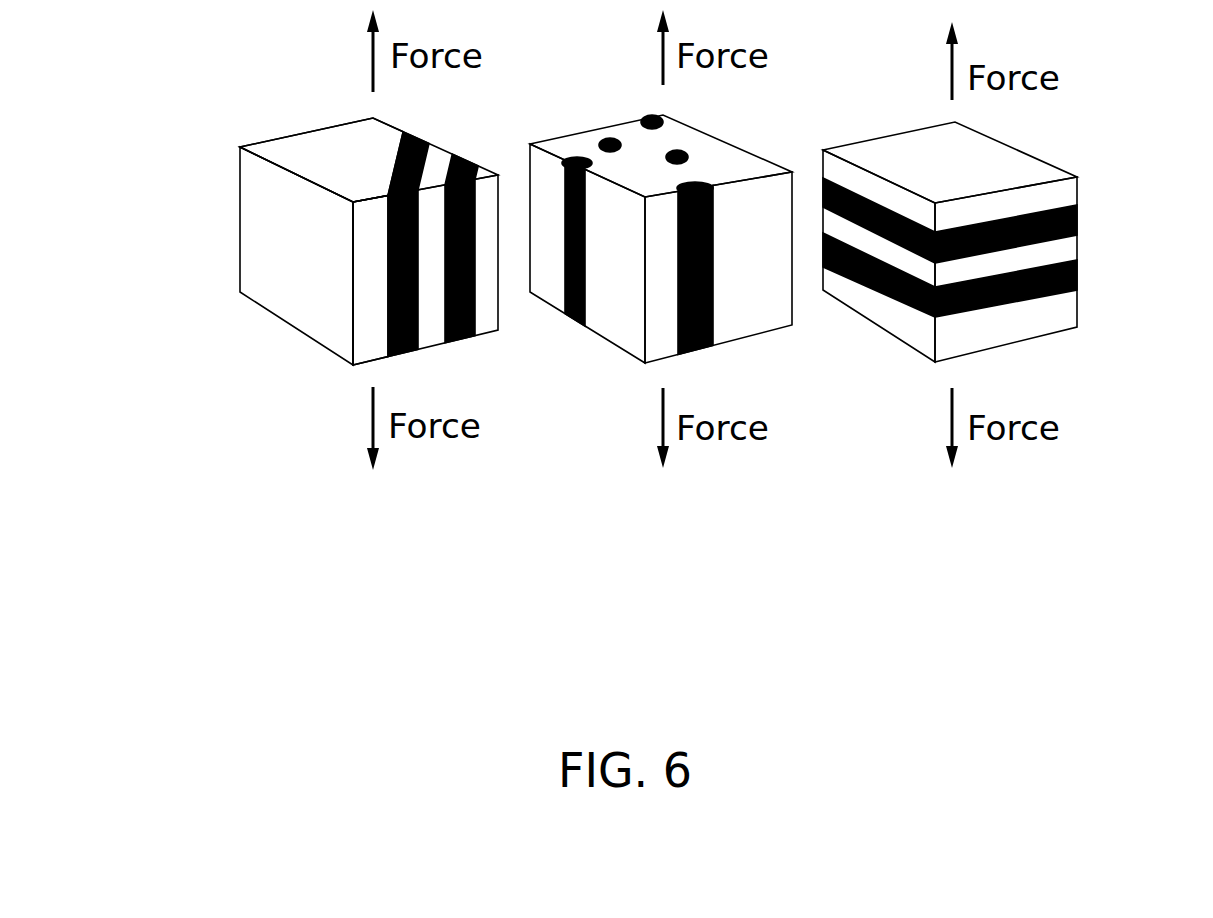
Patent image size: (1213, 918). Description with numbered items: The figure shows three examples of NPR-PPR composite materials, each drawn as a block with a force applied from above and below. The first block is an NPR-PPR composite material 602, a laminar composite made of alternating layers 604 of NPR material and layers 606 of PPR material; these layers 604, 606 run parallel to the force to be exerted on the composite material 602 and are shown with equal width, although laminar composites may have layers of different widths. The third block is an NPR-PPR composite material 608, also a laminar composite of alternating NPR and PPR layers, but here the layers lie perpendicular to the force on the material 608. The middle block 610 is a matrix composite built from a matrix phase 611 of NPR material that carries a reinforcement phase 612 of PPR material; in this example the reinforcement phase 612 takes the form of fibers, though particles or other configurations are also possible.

The NPR-PPR composite material 602 is at (346, 238).
The layers of NPR material 604 is at (458, 337).
The layers of PPR material 606 is at (263, 139).
The NPR-PPR composite material 608 is at (1116, 326).
The piezoelectric block with embedded electrodes 610 is at (687, 235).
The matrix phase 611 is at (583, 147).
The reinforcement phase 612 is at (683, 157).